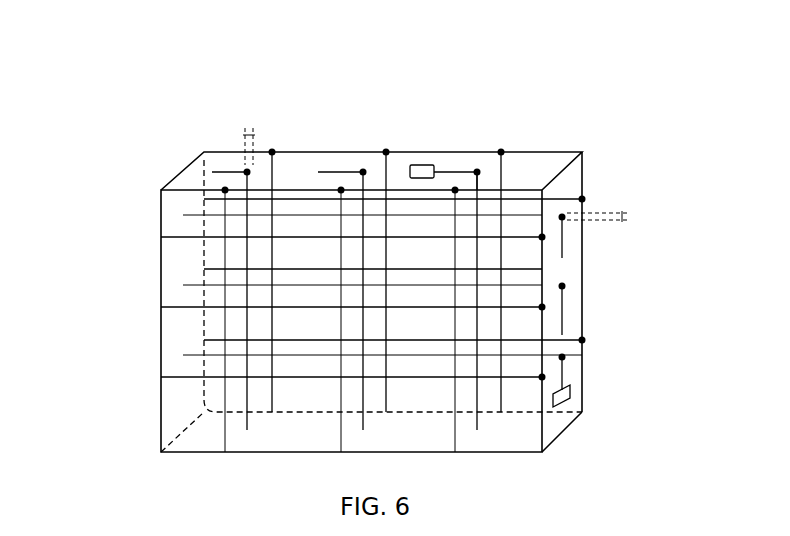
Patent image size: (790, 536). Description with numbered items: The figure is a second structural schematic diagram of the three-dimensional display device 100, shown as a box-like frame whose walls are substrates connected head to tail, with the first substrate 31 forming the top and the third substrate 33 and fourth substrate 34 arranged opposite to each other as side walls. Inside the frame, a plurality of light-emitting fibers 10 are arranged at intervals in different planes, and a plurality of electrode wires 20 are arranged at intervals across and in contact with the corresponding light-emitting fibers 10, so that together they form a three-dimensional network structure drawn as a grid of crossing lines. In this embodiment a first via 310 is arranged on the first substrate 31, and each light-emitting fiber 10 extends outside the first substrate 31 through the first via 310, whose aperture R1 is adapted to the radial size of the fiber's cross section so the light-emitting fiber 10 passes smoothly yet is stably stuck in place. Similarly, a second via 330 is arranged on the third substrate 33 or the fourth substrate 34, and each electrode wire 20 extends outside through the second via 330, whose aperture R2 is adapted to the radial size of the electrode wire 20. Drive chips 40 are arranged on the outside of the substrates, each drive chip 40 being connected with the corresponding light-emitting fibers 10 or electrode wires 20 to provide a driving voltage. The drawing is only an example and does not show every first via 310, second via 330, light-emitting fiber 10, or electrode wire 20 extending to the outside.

The 3D display device 100 is at (172, 114).
The light-emitting fiber 10 is at (452, 170).
The electrode wire 20 is at (563, 237).
The first substrate 31 is at (308, 163).
The first via 310 is at (357, 172).
The third substrate 33 is at (161, 266).
The second via 330 is at (564, 357).
The fourth substrate 34 is at (586, 415).
The drive chip 40 is at (422, 165).
The aperture of the first via R1 is at (248, 137).
The aperture of the second via R2 is at (610, 217).